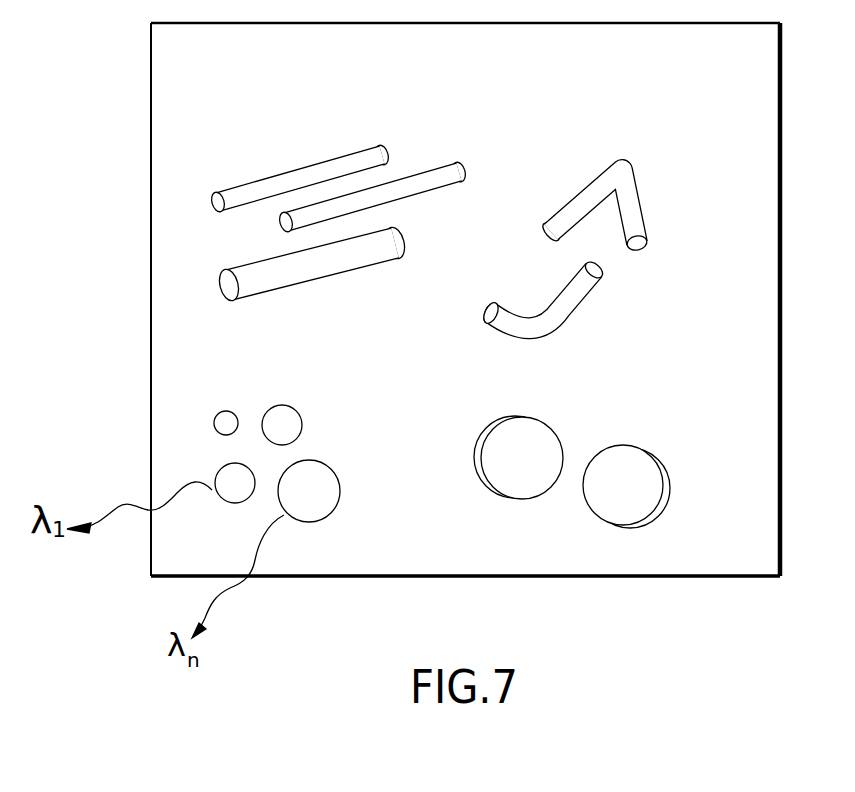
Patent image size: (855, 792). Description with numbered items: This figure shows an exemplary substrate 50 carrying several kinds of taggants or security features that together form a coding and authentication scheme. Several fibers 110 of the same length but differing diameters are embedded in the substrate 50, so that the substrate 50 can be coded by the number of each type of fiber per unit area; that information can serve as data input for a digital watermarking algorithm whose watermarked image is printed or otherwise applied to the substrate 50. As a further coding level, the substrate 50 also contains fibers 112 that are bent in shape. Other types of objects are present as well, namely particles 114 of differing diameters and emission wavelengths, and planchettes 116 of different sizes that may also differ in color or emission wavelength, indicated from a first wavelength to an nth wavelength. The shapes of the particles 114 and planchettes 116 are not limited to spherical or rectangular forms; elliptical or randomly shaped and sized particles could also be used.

The substrate 50 is at (781, 382).
The fibers 110 is at (362, 145).
The bent fibers 112 is at (570, 197).
The particles 114 is at (242, 463).
The planchettes 116 is at (512, 419).